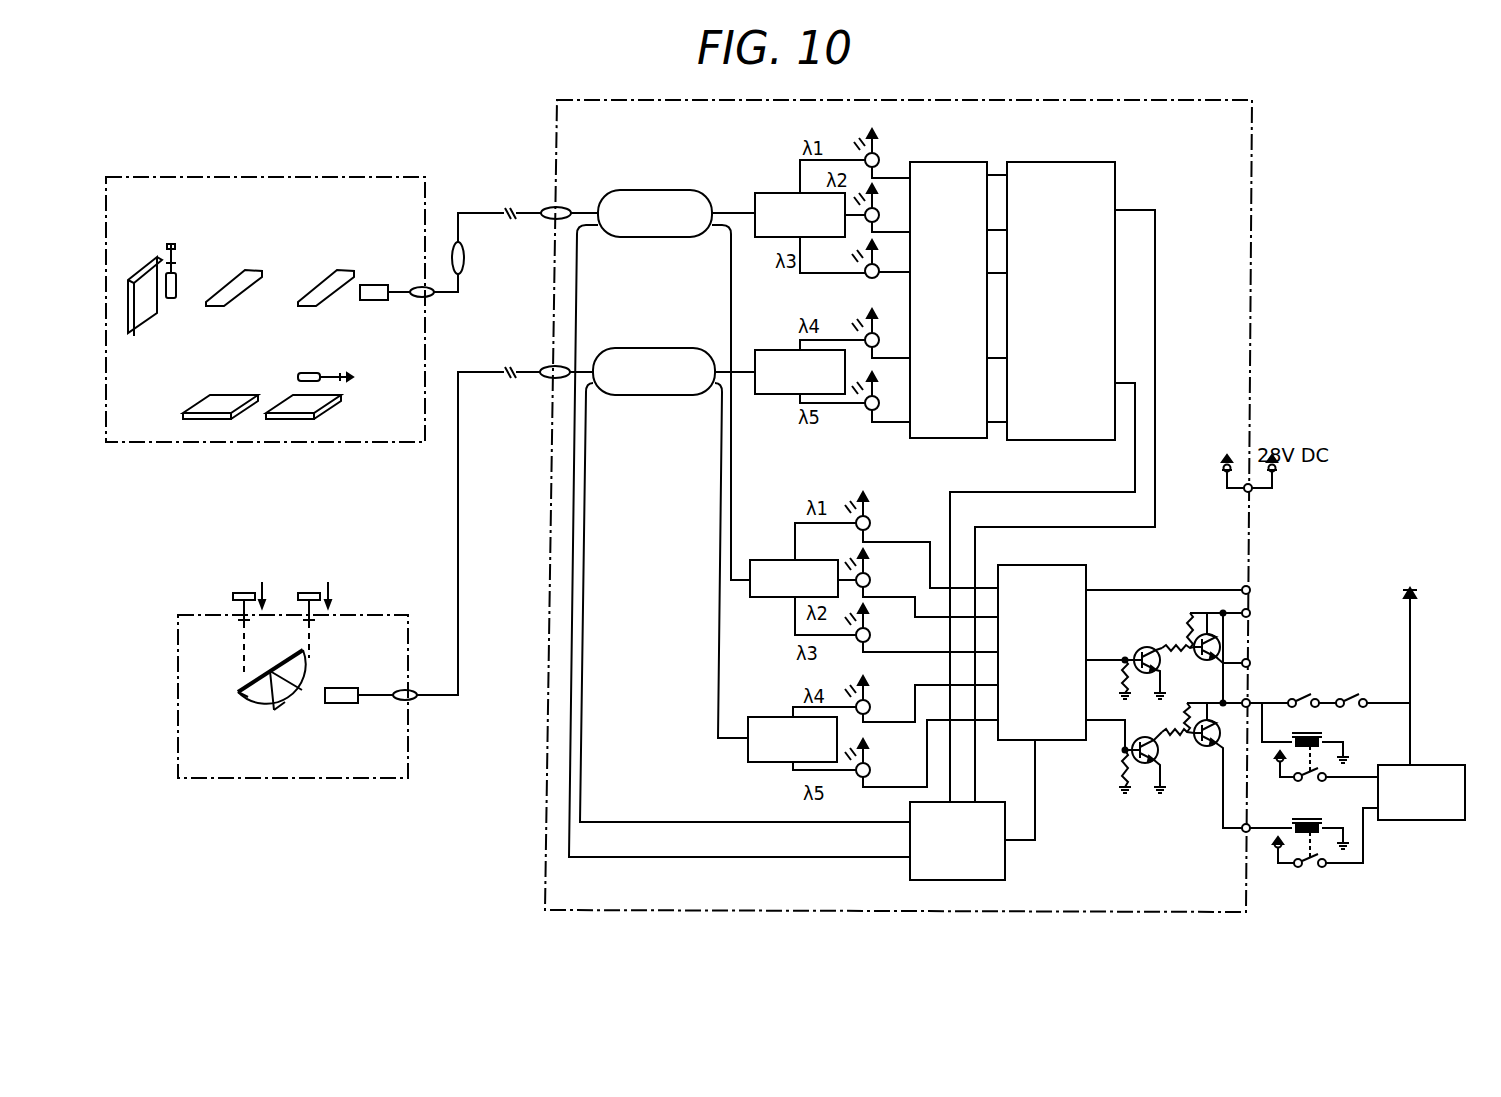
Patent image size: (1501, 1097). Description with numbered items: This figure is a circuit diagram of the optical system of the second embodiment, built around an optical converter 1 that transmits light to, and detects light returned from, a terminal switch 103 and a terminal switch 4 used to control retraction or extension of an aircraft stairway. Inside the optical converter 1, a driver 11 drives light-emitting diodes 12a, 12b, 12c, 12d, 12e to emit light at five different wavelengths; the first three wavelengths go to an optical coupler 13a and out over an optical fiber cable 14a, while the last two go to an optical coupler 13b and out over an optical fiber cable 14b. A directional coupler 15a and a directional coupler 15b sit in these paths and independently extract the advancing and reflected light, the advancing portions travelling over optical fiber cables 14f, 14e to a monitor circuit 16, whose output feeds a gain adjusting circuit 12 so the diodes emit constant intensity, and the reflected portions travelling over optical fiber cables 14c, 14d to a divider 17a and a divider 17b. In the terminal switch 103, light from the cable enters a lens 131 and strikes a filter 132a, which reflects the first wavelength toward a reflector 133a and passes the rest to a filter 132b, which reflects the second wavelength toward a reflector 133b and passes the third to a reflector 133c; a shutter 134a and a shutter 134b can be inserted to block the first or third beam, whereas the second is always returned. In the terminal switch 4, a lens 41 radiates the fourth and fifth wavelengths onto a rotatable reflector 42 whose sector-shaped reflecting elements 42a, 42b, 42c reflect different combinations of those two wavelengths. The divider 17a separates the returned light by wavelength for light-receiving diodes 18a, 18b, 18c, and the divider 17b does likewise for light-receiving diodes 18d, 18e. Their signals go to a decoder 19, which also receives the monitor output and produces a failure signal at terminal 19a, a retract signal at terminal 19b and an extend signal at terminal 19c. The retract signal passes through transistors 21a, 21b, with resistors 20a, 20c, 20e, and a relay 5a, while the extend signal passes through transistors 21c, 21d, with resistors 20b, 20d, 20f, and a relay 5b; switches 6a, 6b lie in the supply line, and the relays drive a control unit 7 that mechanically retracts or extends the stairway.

The optical converter 1 is at (1252, 240).
The terminal switch 103 is at (408, 177).
The reflector 133c is at (140, 272).
The shutter 134b is at (178, 285).
The filter 132b is at (248, 268).
The filter 132a is at (336, 268).
The lens 131 is at (374, 285).
The shutter 134a is at (312, 373).
The reflector 133b is at (187, 408).
The reflector 133a is at (338, 405).
The terminal switch 4 is at (395, 615).
The reflector 42 is at (270, 670).
The reflecting element 42a is at (310, 668).
The reflecting element 42b is at (290, 697).
The reflecting element 42c is at (242, 697).
The lens 41 is at (345, 703).
The directional coupler 15a is at (690, 190).
The directional coupler 15b is at (692, 348).
The optical fiber cable 14a is at (740, 210).
The optical fiber cable 14b is at (745, 376).
The optical fiber cable 14c is at (731, 455).
The optical fiber cable 14d is at (721, 453).
The optical fiber cable 14e is at (586, 483).
The optical fiber cable 14f is at (577, 518).
The optical coupler 13a is at (763, 237).
The optical coupler 13b is at (773, 350).
The light-emitting diode 12a is at (880, 157).
The light-emitting diode 12b is at (880, 213).
The light-emitting diode 12c is at (866, 278).
The light-emitting diode 12d is at (880, 335).
The light-emitting diode 12e is at (866, 412).
The driver 11 is at (972, 162).
The gain adjusting circuit 12 is at (1078, 162).
The divider 17a is at (765, 560).
The divider 17b is at (762, 717).
The light-receiving diode 18a is at (871, 520).
The light-receiving diode 18b is at (871, 577).
The light-receiving diode 18c is at (871, 636).
The light-receiving diode 18d is at (871, 702).
The light-receiving diode 18e is at (871, 768).
The decoder 19 is at (1072, 565).
The terminal 19a is at (1092, 590).
The terminal 19b is at (1090, 660).
The terminal 19c is at (1092, 722).
The monitor circuit 16 is at (1005, 862).
The resistor 20a is at (1120, 678).
The resistor 20b is at (1120, 770).
The resistor 20c is at (1176, 652).
The resistor 20d is at (1175, 737).
The resistor 20e is at (1188, 612).
The resistor 20f is at (1184, 716).
The transistor 21a is at (1147, 647).
The transistor 21b is at (1221, 650).
The transistor 21c is at (1145, 764).
The transistor 21d is at (1207, 748).
The switch 6a is at (1303, 694).
The switch 6b is at (1351, 694).
The relay 5a is at (1328, 741).
The relay 5b is at (1325, 822).
The control unit 7 is at (1448, 765).